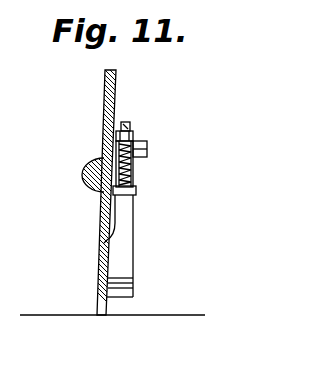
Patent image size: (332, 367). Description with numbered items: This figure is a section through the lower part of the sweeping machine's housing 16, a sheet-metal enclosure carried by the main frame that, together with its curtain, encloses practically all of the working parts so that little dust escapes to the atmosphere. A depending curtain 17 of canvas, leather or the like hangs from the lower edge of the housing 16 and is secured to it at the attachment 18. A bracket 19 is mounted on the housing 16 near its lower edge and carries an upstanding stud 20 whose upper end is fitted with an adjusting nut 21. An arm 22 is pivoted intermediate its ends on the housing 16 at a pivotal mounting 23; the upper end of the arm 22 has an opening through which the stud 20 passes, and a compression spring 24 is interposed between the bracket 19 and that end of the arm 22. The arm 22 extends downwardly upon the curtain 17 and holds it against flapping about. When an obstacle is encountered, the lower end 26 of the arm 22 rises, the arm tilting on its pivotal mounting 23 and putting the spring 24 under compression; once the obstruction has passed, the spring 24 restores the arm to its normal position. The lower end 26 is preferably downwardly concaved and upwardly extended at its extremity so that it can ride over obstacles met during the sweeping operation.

The housing 16 is at (110, 100).
The curtain 17 is at (101, 253).
The attachment of curtain 18 is at (86, 182).
The bracket 19 is at (136, 190).
The stud 20 is at (128, 126).
The adjusting nut 21 is at (133, 136).
The arm 22 is at (135, 276).
The pivotal mounting 23 is at (147, 150).
The compression spring 24 is at (134, 172).
The lower end of arm 26 is at (123, 297).